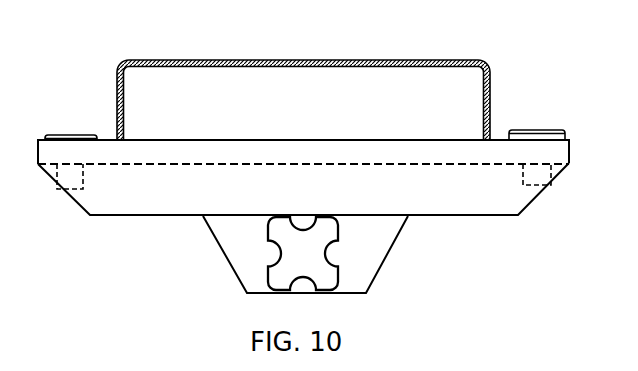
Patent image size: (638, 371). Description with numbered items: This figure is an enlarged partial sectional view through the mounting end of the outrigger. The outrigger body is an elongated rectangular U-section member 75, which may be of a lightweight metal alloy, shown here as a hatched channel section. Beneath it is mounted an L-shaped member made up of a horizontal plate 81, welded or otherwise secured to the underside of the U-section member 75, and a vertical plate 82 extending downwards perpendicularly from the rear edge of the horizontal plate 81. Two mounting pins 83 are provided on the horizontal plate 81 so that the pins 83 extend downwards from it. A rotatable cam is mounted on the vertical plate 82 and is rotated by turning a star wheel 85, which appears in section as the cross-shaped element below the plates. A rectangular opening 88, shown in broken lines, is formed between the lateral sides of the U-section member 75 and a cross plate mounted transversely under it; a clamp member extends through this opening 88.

The U-section member 75 is at (340, 59).
The horizontal plate 81 is at (569, 149).
The vertical plate 82 is at (470, 217).
The mounting pin 83 is at (545, 129).
The star wheel 85 is at (277, 249).
The rectangular opening 88 is at (58, 191).